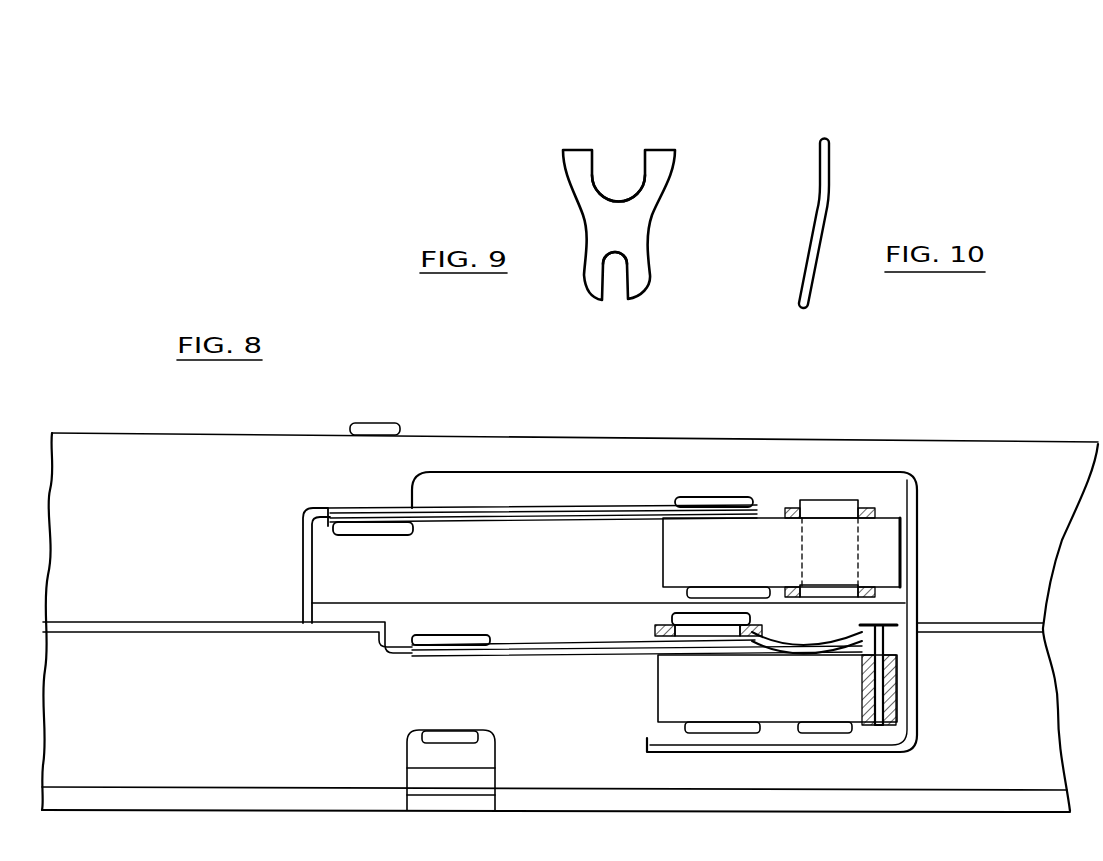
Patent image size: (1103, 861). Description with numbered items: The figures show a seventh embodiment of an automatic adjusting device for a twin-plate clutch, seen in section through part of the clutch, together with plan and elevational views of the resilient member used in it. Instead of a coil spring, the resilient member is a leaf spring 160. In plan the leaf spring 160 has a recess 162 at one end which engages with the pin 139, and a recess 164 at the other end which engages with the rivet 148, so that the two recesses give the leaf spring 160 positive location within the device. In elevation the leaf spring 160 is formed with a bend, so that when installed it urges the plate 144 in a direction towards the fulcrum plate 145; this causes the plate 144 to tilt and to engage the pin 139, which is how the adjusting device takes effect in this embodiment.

In FIG. 8, the pin 139 is at (845, 505).
In FIG. 8, the plate 144 is at (852, 600).
In FIG. 8, the fulcrum plate 145 is at (490, 655).
In FIG. 8, the rivet 148 is at (882, 624).
In FIG. 9, the leaf spring 160 is at (667, 207).
In FIG. 10, the leaf spring 160 is at (826, 209).
In FIG. 8, the leaf spring 160 is at (900, 654).
In FIG. 9, the recess 162 is at (615, 170).
In FIG. 9, the recess 164 is at (615, 281).